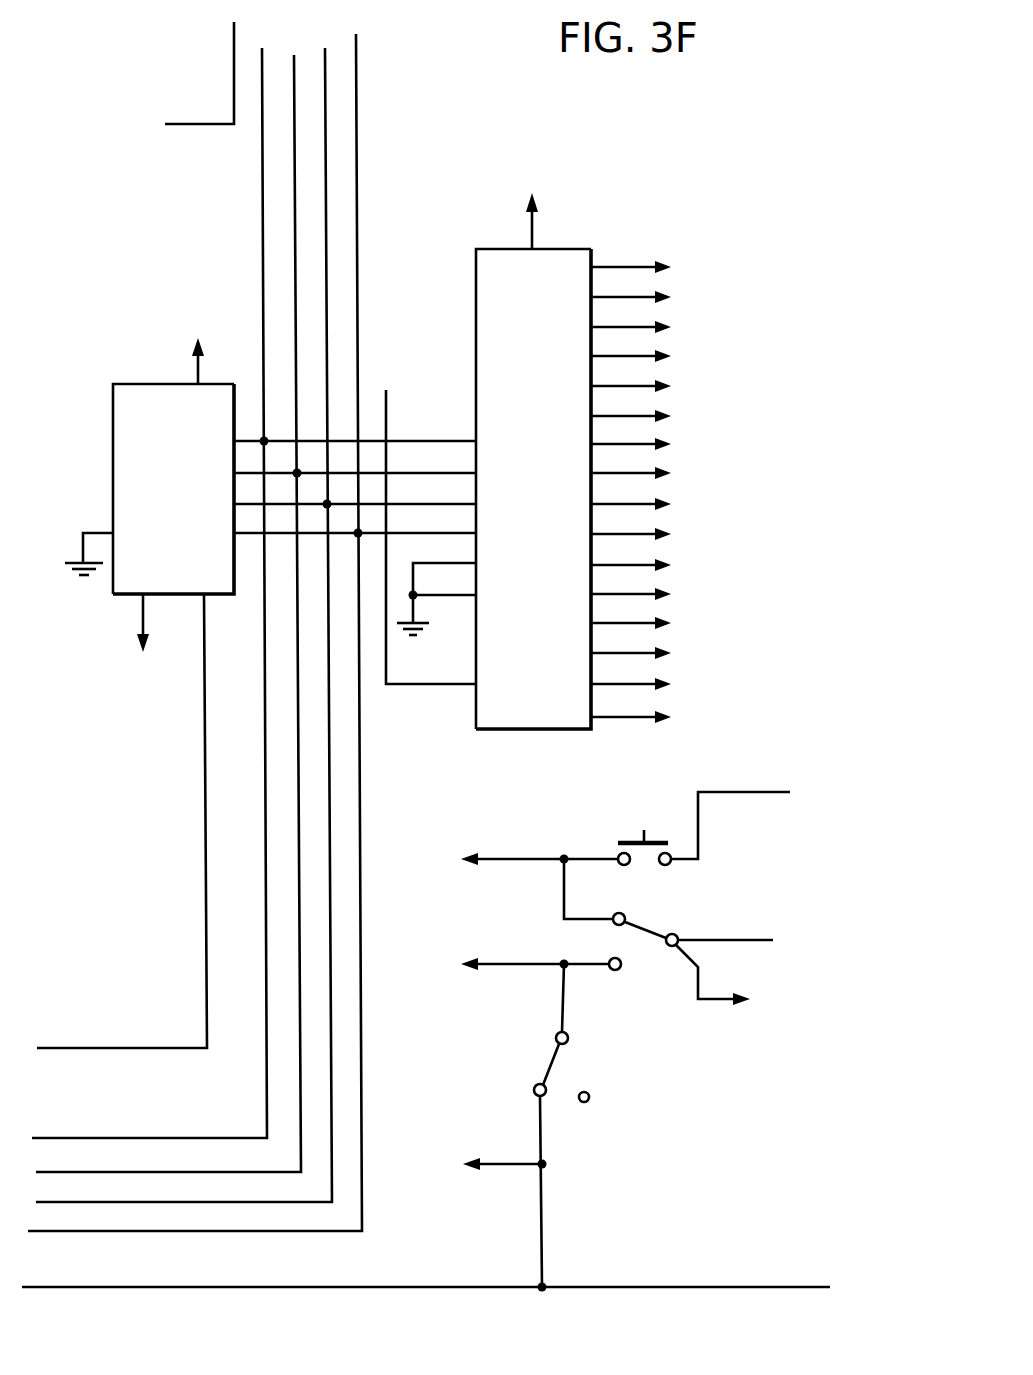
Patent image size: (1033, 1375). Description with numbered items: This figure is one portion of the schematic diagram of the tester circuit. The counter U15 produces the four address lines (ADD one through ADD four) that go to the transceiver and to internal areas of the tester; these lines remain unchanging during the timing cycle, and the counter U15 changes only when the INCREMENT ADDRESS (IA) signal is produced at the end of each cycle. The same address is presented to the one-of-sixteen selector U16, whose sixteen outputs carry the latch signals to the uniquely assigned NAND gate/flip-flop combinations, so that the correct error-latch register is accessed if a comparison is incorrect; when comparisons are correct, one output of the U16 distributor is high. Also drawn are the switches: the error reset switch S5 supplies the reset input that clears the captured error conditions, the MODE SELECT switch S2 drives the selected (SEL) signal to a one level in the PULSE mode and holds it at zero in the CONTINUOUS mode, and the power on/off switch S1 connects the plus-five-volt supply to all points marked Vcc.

The counter U15 is at (256, 680).
The one-of-sixteen selector U16 is at (557, 447).
The error reset switch S5 is at (579, 829).
The mode select switch S2 is at (597, 936).
The power on/off switch S1 is at (514, 1128).